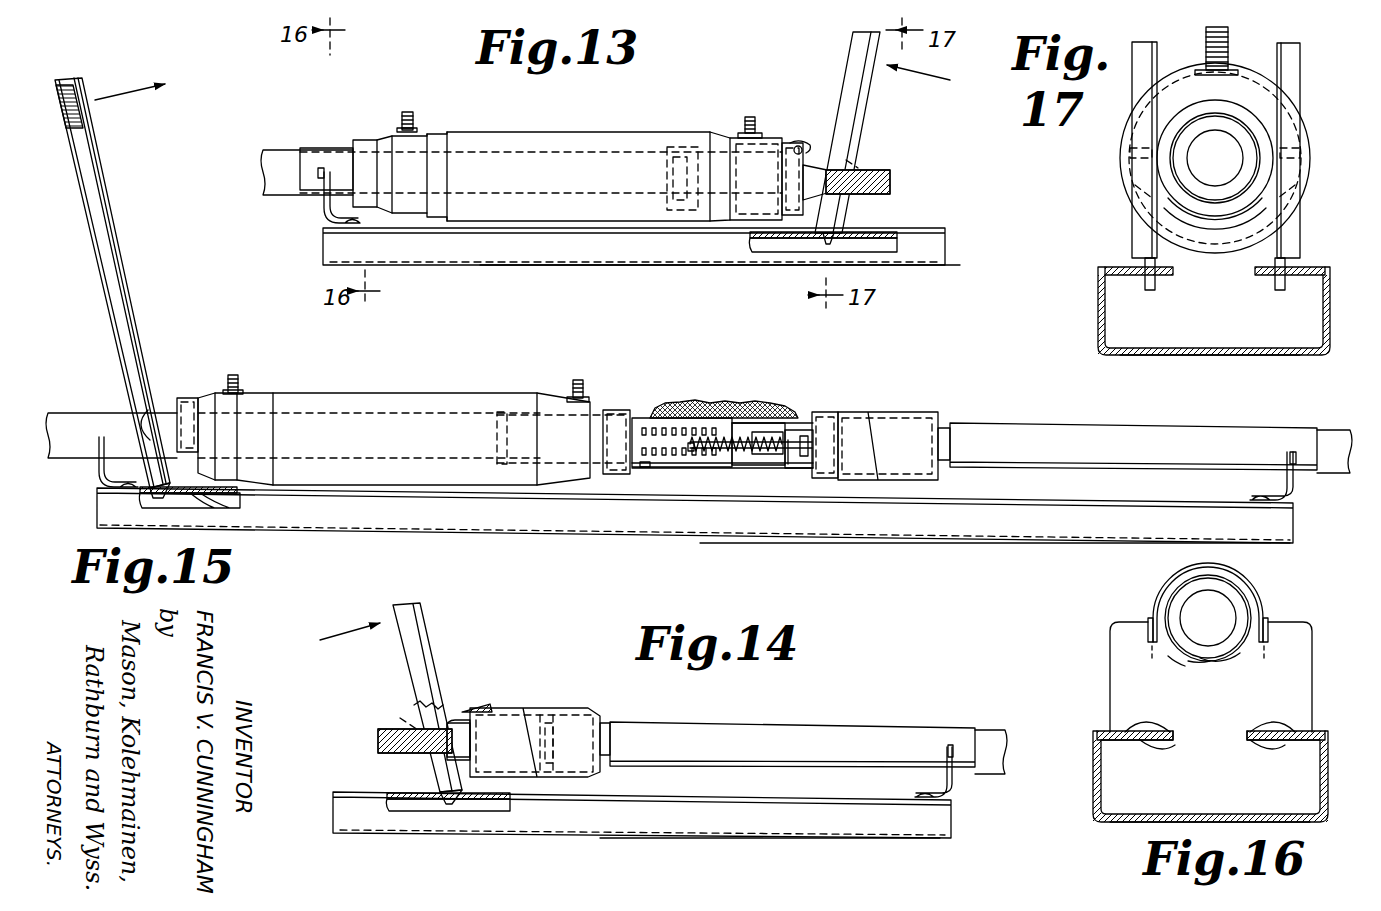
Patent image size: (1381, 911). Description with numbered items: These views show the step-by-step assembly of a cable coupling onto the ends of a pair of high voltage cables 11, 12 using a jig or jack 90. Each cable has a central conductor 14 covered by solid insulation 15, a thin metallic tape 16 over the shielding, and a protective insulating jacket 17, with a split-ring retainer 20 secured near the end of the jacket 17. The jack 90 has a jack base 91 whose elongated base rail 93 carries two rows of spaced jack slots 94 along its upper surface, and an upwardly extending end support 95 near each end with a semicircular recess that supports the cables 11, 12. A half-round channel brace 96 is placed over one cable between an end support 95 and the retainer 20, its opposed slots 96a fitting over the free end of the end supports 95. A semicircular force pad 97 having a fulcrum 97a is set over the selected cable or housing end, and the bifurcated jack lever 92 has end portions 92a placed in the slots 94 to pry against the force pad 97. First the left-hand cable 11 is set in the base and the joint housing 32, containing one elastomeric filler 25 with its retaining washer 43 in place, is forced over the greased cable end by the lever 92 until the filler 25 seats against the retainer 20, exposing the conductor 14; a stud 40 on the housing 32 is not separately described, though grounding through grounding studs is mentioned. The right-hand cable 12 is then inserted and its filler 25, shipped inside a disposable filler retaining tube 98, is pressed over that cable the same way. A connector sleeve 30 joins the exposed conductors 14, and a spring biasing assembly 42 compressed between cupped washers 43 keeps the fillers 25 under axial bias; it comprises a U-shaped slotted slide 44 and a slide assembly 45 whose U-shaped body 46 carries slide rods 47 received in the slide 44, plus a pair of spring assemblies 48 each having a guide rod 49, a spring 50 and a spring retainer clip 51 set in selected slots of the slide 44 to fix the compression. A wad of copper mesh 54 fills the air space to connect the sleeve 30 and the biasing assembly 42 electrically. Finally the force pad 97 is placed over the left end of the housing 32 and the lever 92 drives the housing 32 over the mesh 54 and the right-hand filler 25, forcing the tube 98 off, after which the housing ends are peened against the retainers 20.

In FIG. 13, the high voltage cable 11 is at (262, 174).
In FIG. 17, the high voltage cable 11 is at (1168, 167).
In FIG. 15, the high voltage cable 11 is at (70, 410).
In FIG. 16, the high voltage cable 11 is at (1244, 580).
In FIG. 15, the high voltage cable 12 is at (1340, 426).
In FIG. 14, the high voltage cable 12 is at (998, 728).
In FIG. 13, the central conductor 14 is at (890, 182).
In FIG. 17, the central conductor 14 is at (1222, 185).
In FIG. 14, the central conductor 14 is at (378, 742).
In FIG. 16, the central conductor 14 is at (1205, 600).
In FIG. 13, the solid insulation 15 is at (815, 165).
In FIG. 17, the solid insulation 15 is at (1185, 188).
In FIG. 14, the solid insulation 15 is at (452, 723).
In FIG. 16, the solid insulation 15 is at (1222, 653).
In FIG. 16, the metallic tape 16 is at (1198, 663).
In FIG. 16, the protective insulating jacket 17 is at (1172, 656).
In FIG. 13, the retainer 20 is at (672, 150).
In FIG. 15, the retainer 20 is at (500, 412).
In FIG. 14, the retainer 20 is at (606, 723).
In FIG. 13, the elastomeric filler 25 is at (697, 148).
In FIG. 15, the elastomeric filler 25 is at (518, 412).
In FIG. 14, the elastomeric filler 25 is at (545, 715).
In FIG. 15, the connector sleeve 30 is at (742, 438).
In FIG. 13, the housing 32 is at (556, 132).
In FIG. 17, the housing 32 is at (1122, 130).
In FIG. 15, the housing 32 is at (348, 392).
In FIG. 13, the nut 40 is at (407, 112).
In FIG. 17, the nut 40 is at (1206, 44).
In FIG. 15, the nut 40 is at (233, 375).
In FIG. 15, the spring biasing assembly 42 is at (645, 416).
In FIG. 13, the cupped washer 43 is at (798, 143).
In FIG. 17, the cupped washer 43 is at (1270, 193).
In FIG. 15, the cupped washer 43 is at (620, 410).
In FIG. 14, the cupped washer 43 is at (480, 704).
In FIG. 15, the slotted slide 44 is at (645, 467).
In FIG. 15, the slide assembly 45 is at (798, 428).
In FIG. 15, the body 46 is at (806, 456).
In FIG. 15, the slide rods 47 is at (736, 428).
In FIG. 15, the spring assemblies 48 is at (757, 436).
In FIG. 15, the guide rod 49 is at (790, 463).
In FIG. 15, the spring 50 is at (750, 453).
In FIG. 15, the spring retainer clip 51 is at (690, 452).
In FIG. 15, the copper mesh 54 is at (682, 402).
In FIG. 13, the jack 90 is at (640, 283).
In FIG. 17, the jack 90 is at (1115, 246).
In FIG. 15, the jack 90 is at (412, 546).
In FIG. 14, the jack 90 is at (660, 852).
In FIG. 13, the jack base 91 is at (322, 250).
In FIG. 17, the jack base 91 is at (1096, 303).
In FIG. 15, the jack base 91 is at (530, 538).
In FIG. 14, the jack base 91 is at (878, 840).
In FIG. 16, the jack base 91 is at (1091, 779).
In FIG. 13, the jack lever 92 is at (862, 106).
In FIG. 17, the jack lever 92 is at (1292, 60).
In FIG. 14, the jack lever 92 is at (421, 614).
In FIG. 13, the end portions 92a is at (828, 246).
In FIG. 17, the end portions 92a is at (1148, 292).
In FIG. 15, the end portions 92a is at (152, 490).
In FIG. 14, the end portions 92a is at (445, 806).
In FIG. 13, the base rail 93 is at (495, 262).
In FIG. 17, the base rail 93 is at (1098, 322).
In FIG. 15, the base rail 93 is at (905, 545).
In FIG. 14, the base rail 93 is at (775, 838).
In FIG. 16, the base rail 93 is at (1095, 800).
In FIG. 13, the jack slots 94 is at (850, 236).
In FIG. 17, the jack slots 94 is at (1270, 290).
In FIG. 15, the jack slots 94 is at (205, 496).
In FIG. 14, the jack slots 94 is at (420, 811).
In FIG. 16, the jack slots 94 is at (1268, 742).
In FIG. 13, the end support 95 is at (323, 210).
In FIG. 15, the end support 95 is at (99, 457).
In FIG. 14, the end support 95 is at (951, 797).
In FIG. 16, the end support 95 is at (1120, 660).
In FIG. 13, the half-round channel brace 96 is at (336, 150).
In FIG. 15, the half-round channel brace 96 is at (1035, 428).
In FIG. 14, the half-round channel brace 96 is at (820, 722).
In FIG. 16, the half-round channel brace 96 is at (1160, 586).
In FIG. 13, the opposed slots 96a is at (318, 172).
In FIG. 15, the opposed slots 96a is at (1297, 460).
In FIG. 14, the opposed slots 96a is at (950, 755).
In FIG. 16, the opposed slots 96a is at (1150, 633).
In FIG. 13, the force pad 97 is at (792, 143).
In FIG. 17, the force pad 97 is at (1250, 110).
In FIG. 15, the force pad 97 is at (190, 398).
In FIG. 14, the force pad 97 is at (470, 713).
In FIG. 13, the fulcrum 97a is at (858, 166).
In FIG. 17, the fulcrum 97a is at (1302, 140).
In FIG. 15, the fulcrum 97a is at (160, 428).
In FIG. 14, the fulcrum 97a is at (410, 727).
In FIG. 15, the filler retaining tube 98 is at (892, 412).
In FIG. 14, the filler retaining tube 98 is at (560, 708).